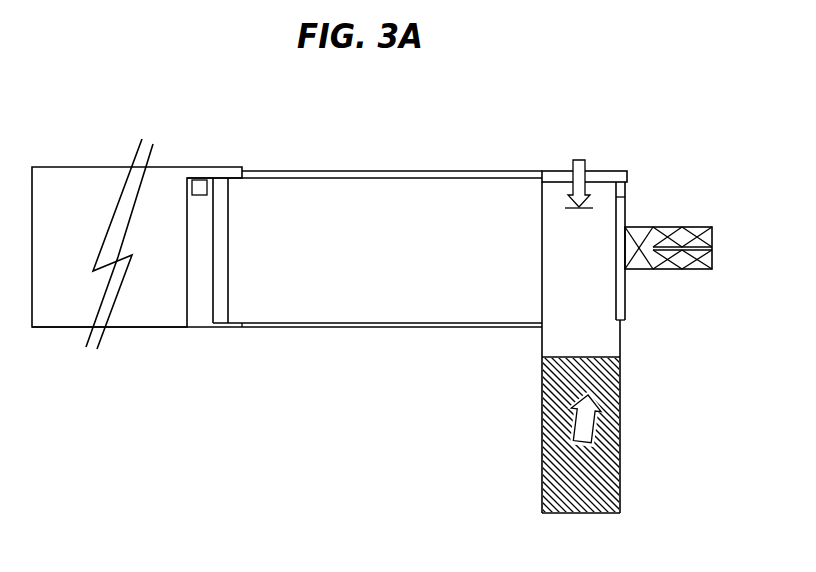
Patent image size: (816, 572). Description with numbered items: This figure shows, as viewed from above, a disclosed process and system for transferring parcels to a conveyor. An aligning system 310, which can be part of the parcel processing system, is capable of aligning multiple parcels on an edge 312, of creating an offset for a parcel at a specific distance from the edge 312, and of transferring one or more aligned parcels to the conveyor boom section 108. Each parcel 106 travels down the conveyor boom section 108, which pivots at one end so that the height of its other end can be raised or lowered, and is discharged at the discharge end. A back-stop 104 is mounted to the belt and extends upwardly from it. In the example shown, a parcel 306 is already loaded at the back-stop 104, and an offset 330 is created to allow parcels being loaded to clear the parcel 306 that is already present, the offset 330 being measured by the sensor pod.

The back-stop 104 is at (200, 167).
The parcel 306 is at (209, 188).
The conveyor boom section 108 is at (417, 330).
The offset 330 is at (599, 193).
The edge 312 is at (631, 212).
The aligning system 310 is at (653, 269).
The parcel 106 is at (602, 426).